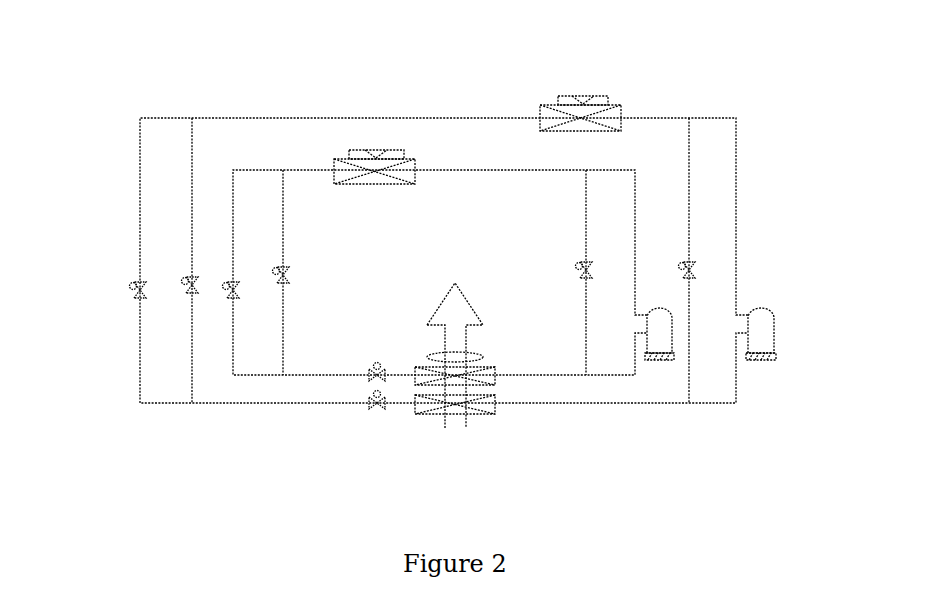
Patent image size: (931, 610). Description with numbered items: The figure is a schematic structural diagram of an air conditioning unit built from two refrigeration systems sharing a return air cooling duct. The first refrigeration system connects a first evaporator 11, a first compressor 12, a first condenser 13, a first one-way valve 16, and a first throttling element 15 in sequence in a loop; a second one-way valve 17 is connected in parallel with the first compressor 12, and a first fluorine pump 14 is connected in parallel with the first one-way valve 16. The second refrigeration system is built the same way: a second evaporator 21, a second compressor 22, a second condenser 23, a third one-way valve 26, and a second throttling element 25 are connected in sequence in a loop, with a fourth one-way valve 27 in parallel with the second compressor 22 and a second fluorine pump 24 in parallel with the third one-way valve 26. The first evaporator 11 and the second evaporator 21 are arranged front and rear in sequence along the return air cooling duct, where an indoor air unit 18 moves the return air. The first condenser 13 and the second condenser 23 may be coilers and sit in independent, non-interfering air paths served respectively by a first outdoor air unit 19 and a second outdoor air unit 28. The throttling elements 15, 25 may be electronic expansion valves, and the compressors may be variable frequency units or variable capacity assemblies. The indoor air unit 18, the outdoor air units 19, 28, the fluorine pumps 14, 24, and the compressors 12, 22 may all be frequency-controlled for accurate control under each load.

The first evaporator 11 is at (475, 413).
The first compressor 12 is at (757, 328).
The first condenser 13 is at (557, 110).
The first fluorine pump 14 is at (137, 288).
The first throttling element 15 is at (378, 405).
The first one-way valve 16 is at (190, 283).
The second one-way valve 17 is at (693, 272).
The indoor air unit 18 is at (478, 357).
The first outdoor air unit 19 is at (600, 97).
The second evaporator 21 is at (490, 380).
The second compressor 22 is at (657, 335).
The second condenser 23 is at (366, 160).
The second fluorine pump 24 is at (232, 280).
The second throttling element 25 is at (372, 378).
The third one-way valve 26 is at (285, 268).
The fourth one-way valve 27 is at (583, 268).
The second outdoor air unit 28 is at (387, 150).